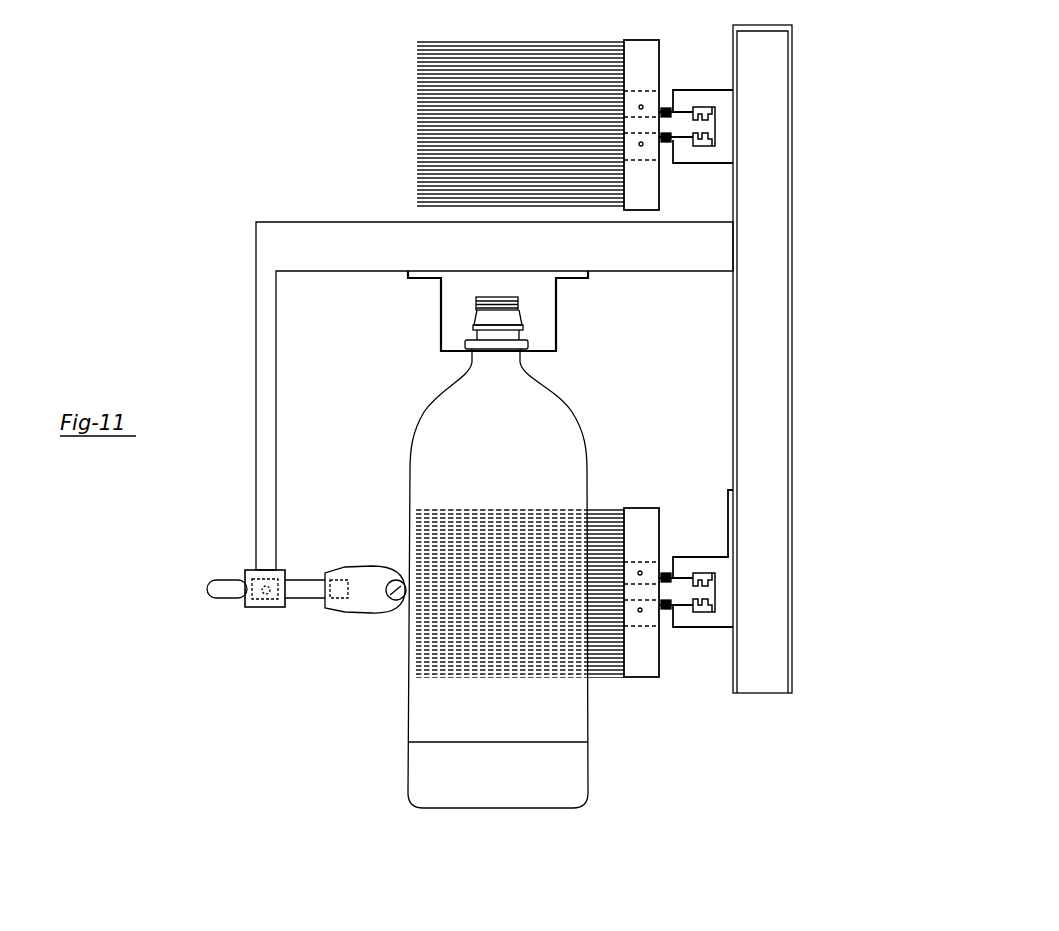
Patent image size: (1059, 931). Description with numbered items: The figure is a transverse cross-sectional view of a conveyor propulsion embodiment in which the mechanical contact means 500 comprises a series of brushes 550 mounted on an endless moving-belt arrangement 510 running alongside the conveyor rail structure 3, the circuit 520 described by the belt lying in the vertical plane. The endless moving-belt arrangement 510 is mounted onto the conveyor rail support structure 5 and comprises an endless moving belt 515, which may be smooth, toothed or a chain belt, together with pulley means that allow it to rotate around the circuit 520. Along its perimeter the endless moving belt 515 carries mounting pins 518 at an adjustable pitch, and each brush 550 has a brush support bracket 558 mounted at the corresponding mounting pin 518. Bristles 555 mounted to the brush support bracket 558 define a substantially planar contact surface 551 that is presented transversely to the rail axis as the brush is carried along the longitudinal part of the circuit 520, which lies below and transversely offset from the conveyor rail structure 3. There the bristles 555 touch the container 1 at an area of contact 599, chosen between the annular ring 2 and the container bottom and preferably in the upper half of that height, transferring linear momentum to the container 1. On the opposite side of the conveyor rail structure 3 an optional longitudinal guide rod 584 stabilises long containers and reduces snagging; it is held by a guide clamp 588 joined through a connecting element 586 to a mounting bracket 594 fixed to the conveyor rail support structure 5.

The container 1 is at (432, 711).
The annular ring 2 is at (478, 338).
The conveyor rail structure 3 is at (556, 310).
The conveyor rail support structure 5 is at (295, 244).
The mechanical contact means 500 is at (634, 518).
The endless moving-belt arrangement 510 is at (683, 557).
The endless moving belt 515 is at (688, 126).
The mounting pin 518 is at (648, 548).
The circuit 520 is at (733, 614).
The brush 550 is at (650, 520).
The planar contact surface 551 is at (612, 652).
The bristles 555 is at (598, 520).
The brush support bracket 558 is at (645, 655).
The longitudinal guide rod 584 is at (391, 612).
The connecting element 586 is at (302, 599).
The guide clamp 588 is at (351, 611).
The mounting bracket 594 is at (260, 606).
The area of contact 599 is at (445, 514).